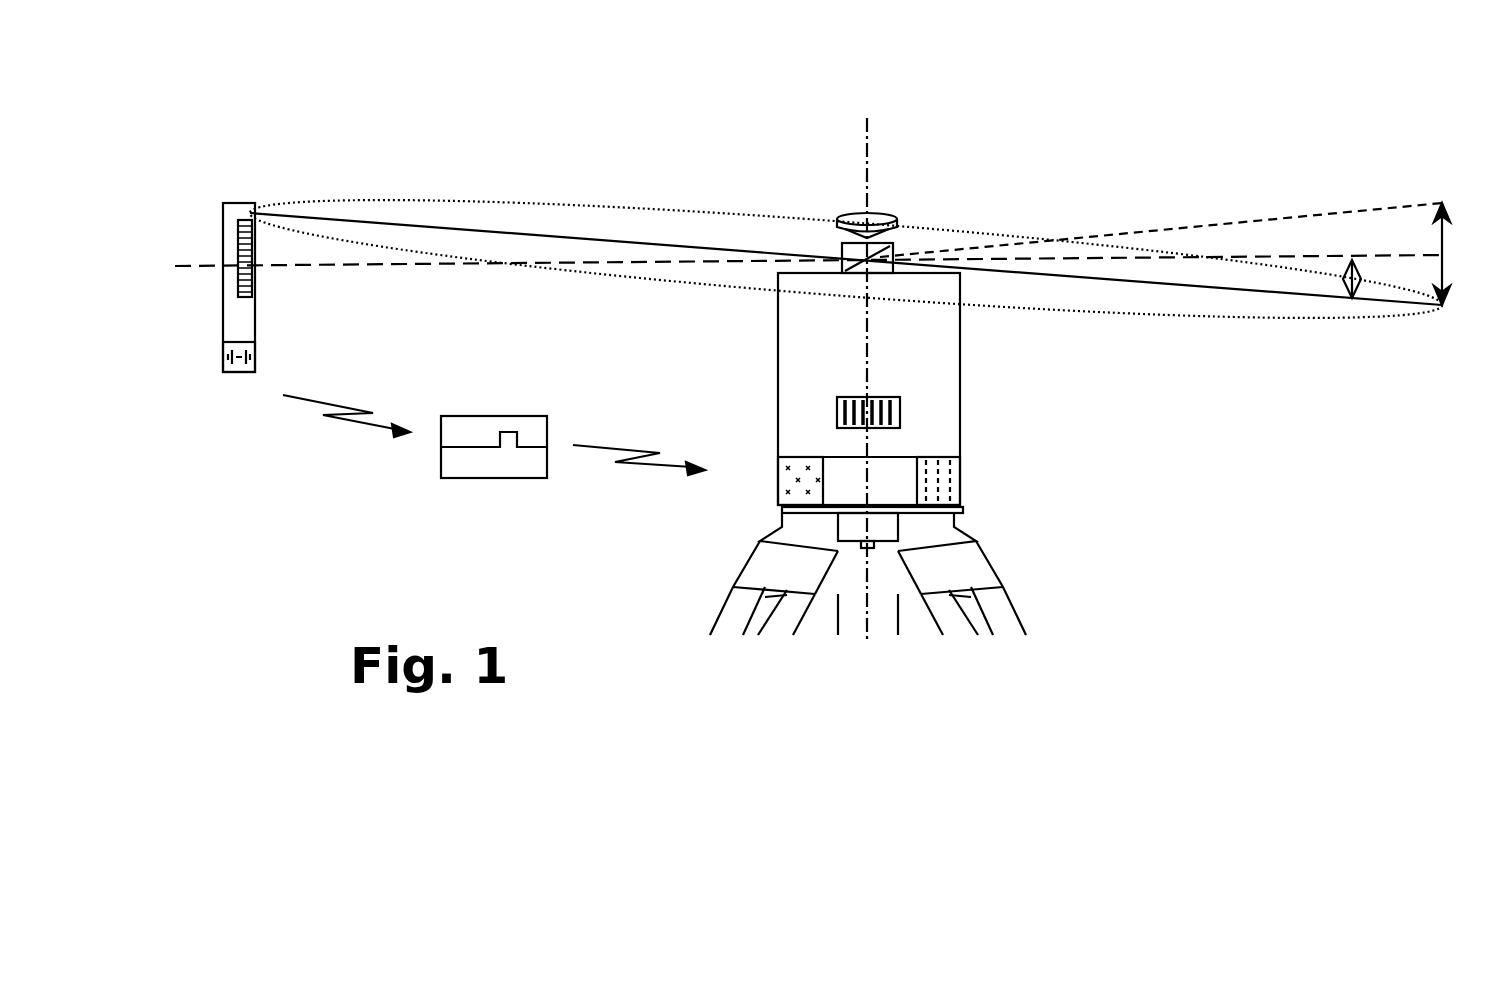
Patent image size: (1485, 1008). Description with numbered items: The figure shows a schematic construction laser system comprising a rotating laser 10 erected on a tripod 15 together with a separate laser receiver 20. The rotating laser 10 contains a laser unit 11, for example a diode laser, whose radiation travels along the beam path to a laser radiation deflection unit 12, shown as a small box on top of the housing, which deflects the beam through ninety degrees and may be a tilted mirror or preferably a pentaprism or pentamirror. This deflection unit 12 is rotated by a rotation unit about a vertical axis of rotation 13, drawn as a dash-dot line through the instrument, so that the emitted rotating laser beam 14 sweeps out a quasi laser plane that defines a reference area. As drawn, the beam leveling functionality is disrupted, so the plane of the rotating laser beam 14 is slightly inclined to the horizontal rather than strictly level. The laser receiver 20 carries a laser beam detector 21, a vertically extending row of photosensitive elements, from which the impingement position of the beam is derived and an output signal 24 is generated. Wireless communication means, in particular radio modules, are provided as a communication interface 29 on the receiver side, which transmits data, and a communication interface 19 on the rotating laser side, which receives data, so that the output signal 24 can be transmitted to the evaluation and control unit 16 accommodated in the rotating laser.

The rotating laser 10 is at (735, 367).
The laser unit 11 is at (900, 397).
The laser radiation deflection unit 12 is at (842, 243).
The axis of rotation 13 is at (867, 192).
The rotating laser beam 14 is at (472, 228).
The tripod 15 is at (716, 592).
The evaluation and control unit 16 is at (952, 480).
The communication interface on the rotating laser side 19 is at (793, 477).
The laser receiver 20 is at (280, 333).
The laser beam detector 21 is at (240, 286).
The output signal 24 is at (485, 493).
The communication interface on the laser receiver side 29 is at (243, 373).